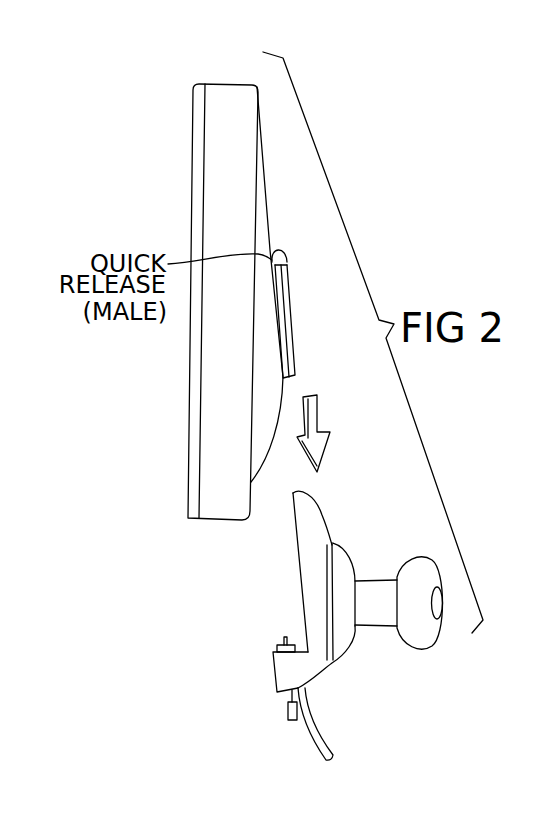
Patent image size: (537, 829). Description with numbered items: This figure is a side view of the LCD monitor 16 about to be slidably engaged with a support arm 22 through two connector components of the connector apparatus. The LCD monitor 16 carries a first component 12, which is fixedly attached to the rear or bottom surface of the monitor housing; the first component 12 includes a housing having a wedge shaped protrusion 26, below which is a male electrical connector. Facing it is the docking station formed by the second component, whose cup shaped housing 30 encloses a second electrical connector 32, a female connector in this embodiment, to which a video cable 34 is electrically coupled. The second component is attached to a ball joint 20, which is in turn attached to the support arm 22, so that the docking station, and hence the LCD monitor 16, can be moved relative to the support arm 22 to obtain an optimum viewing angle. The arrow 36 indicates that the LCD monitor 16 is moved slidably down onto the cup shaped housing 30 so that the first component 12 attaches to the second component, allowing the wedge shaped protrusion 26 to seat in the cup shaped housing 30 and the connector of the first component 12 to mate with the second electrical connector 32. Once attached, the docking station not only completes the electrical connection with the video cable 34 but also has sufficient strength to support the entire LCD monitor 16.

The first component 12 is at (287, 262).
The LCD monitor 16 is at (278, 148).
The ball joint 20 is at (370, 593).
The support arm 22 is at (420, 635).
The wedge shaped protrusion 26 is at (295, 336).
The cup shaped housing 30 is at (313, 513).
The second electrical connector 32 is at (277, 650).
The video cable 34 is at (308, 732).
The arrow 36 is at (328, 422).